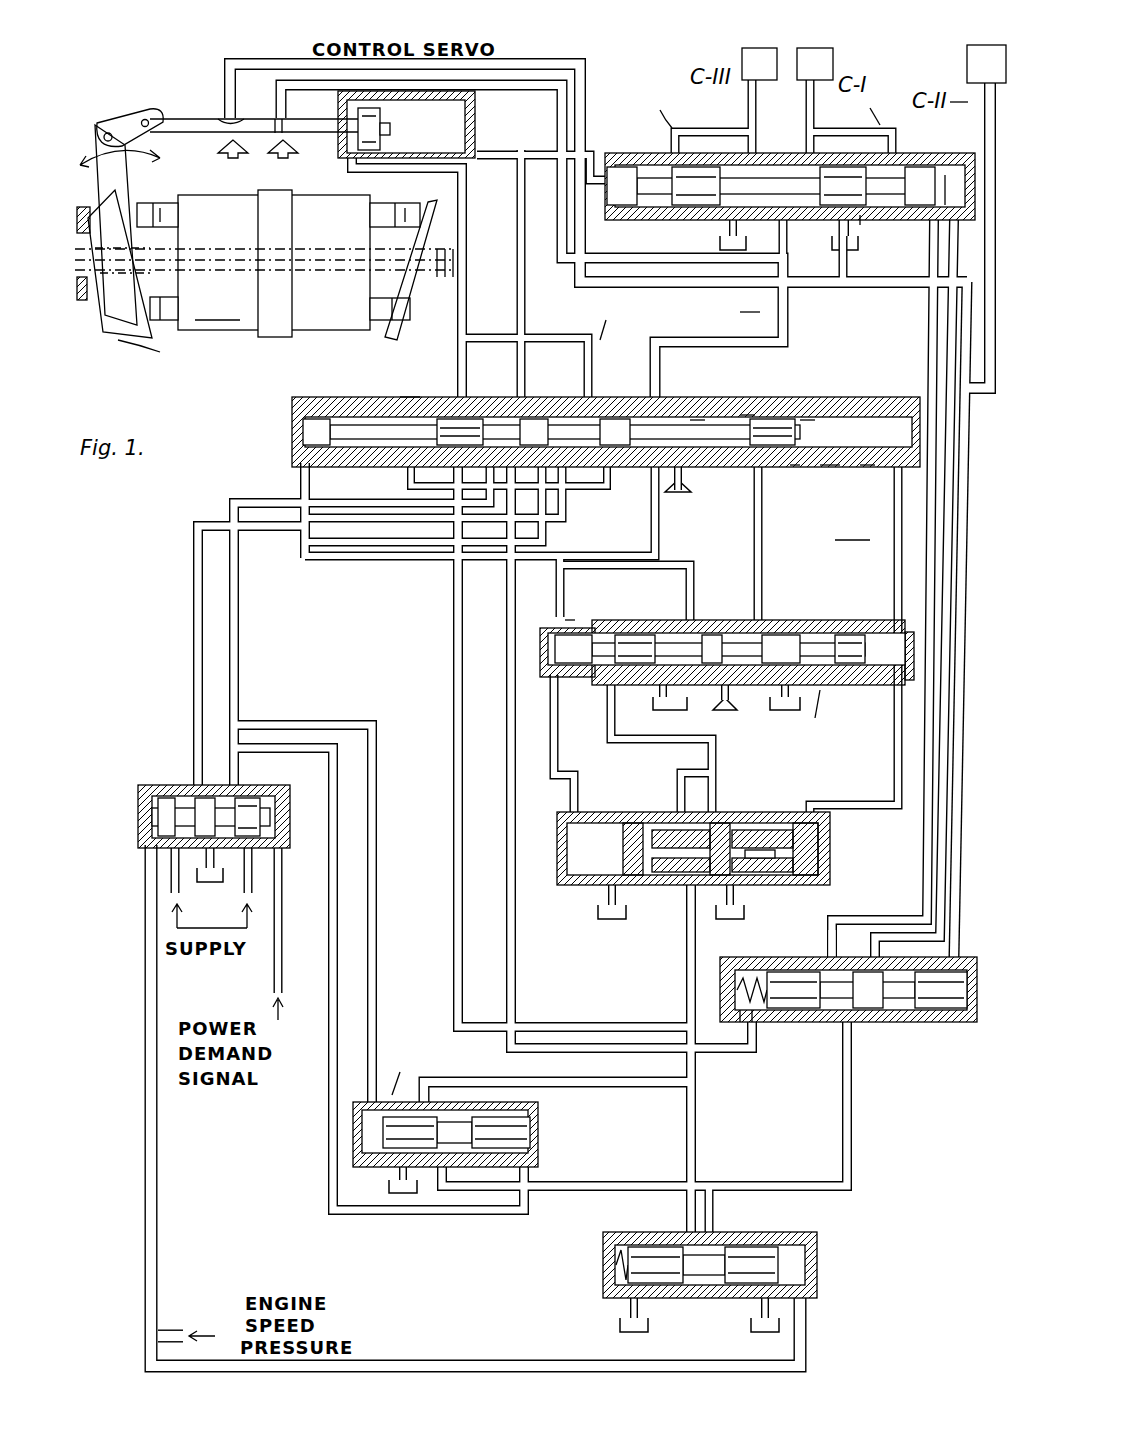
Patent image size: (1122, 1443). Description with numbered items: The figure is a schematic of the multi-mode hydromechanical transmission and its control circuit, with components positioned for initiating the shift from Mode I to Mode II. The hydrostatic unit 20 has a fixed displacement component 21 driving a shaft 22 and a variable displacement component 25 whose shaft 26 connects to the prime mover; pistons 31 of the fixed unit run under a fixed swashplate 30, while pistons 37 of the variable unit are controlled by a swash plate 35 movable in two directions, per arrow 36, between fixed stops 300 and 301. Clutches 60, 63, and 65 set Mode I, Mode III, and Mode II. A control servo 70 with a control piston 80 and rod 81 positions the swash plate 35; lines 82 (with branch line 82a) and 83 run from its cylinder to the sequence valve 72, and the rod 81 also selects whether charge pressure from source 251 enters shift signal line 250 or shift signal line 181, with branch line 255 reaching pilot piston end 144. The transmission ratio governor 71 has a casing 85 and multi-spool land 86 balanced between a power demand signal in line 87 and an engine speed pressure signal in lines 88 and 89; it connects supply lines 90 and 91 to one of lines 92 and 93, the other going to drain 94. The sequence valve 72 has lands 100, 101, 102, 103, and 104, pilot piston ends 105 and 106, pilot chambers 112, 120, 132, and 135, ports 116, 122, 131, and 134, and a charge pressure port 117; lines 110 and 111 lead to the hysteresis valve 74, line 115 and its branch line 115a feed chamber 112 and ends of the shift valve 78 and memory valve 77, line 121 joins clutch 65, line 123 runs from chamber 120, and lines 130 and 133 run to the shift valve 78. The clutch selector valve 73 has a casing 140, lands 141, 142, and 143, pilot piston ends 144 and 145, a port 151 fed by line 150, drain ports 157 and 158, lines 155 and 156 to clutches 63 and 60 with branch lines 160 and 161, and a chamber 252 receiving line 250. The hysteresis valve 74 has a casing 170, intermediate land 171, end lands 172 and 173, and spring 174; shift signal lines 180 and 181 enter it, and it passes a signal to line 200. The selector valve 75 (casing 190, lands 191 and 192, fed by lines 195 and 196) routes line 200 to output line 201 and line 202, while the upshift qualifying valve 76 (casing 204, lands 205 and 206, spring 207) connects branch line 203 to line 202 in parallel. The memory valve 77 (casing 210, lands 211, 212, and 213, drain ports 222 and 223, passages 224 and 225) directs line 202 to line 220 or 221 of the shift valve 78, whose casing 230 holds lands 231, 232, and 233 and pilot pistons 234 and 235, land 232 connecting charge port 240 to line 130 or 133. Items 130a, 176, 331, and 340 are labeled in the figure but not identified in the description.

The hydrostatic unit 20 is at (230, 345).
The fixed displacement component 21 is at (350, 320).
The shaft 22 is at (440, 262).
The variable displacement component 25 is at (217, 306).
The shaft 26 is at (140, 300).
The fixed swashplate 30 is at (420, 302).
The pistons 31 is at (377, 205).
The swash plate 35 is at (141, 362).
The arrow 36 is at (158, 158).
The pistons 37 is at (165, 204).
The clutch 60 is at (825, 70).
The clutch 63 is at (742, 60).
The clutch 65 is at (967, 72).
The control servo 70 is at (478, 103).
The transmission ratio governor 71 is at (254, 766).
The sequence valve 72 is at (576, 448).
The clutch selector valve 73 is at (782, 196).
The hysteresis valve 74 is at (849, 1021).
The selector valve 75 is at (465, 1109).
The upshift qualifying valve 76 is at (721, 1246).
The memory valve 77 is at (722, 852).
The shift valve 78 is at (727, 662).
The control piston 80 is at (392, 131).
The rod 81 is at (306, 160).
The line 82 is at (468, 212).
The branch line 82a is at (610, 319).
The line 83 is at (523, 290).
The casing 85 is at (140, 838).
The multi-spool valve land 86 is at (250, 800).
The line 87 is at (273, 958).
The line 88 is at (170, 1328).
The line 89 is at (143, 1137).
The line 90 is at (170, 882).
The line 91 is at (255, 876).
The line 92 is at (193, 608).
The line 93 is at (240, 605).
The drain 94 is at (205, 882).
The land 100 is at (475, 412).
The land 101 is at (536, 412).
The land 102 is at (625, 412).
The land 103 is at (700, 412).
The land 104 is at (812, 412).
The pilot piston end 105 is at (348, 466).
The pilot piston end 106 is at (808, 470).
The line 110 is at (450, 790).
The line 111 is at (505, 812).
The pilot chamber 112 is at (300, 438).
The line 115 is at (620, 570).
The branch line 115a is at (560, 607).
The port 116 is at (450, 507).
The charge pressure port 117 is at (672, 480).
The pilot chamber 120 is at (870, 470).
The line 121 is at (925, 385).
The port 122 is at (760, 395).
The line 123 is at (893, 555).
The line 130 is at (712, 560).
The passage branch 130a is at (430, 548).
The port 131 is at (606, 490).
The pilot chamber 132 is at (440, 395).
The second line 133 is at (825, 552).
The port 134 is at (774, 433).
The pilot chamber 135 is at (800, 470).
The valve casing 140 is at (878, 275).
The land 141 is at (696, 186).
The land 142 is at (744, 237).
The land 143 is at (843, 186).
The pilot piston end 144 is at (620, 165).
The pilot piston end 145 is at (935, 165).
The line 150 is at (748, 315).
The port 151 is at (829, 237).
The line 155 is at (748, 106).
The line 156 is at (820, 122).
The drain port 157 is at (760, 245).
The drain port 158 is at (841, 250).
The branch line 160 is at (651, 103).
The branch line 161 is at (890, 103).
The casing 170 is at (760, 1045).
The intermediate land 171 is at (838, 965).
The end land 172 is at (760, 1034).
The end land 173 is at (868, 1012).
The spring 174 is at (742, 1030).
The hysteresis valve land 176 is at (932, 1012).
The shift signal line 180 is at (937, 740).
The shift signal line 181 is at (252, 56).
The casing 190 is at (400, 1069).
The land 191 is at (395, 1128).
The land 192 is at (500, 1128).
The interconnecting line 195 is at (378, 960).
The interconnecting line 196 is at (395, 1218).
The line 200 is at (855, 1156).
The output line 201 is at (510, 1075).
The line 202 is at (686, 996).
The branch line 203 is at (716, 1216).
The casing 204 is at (800, 1235).
The land 205 is at (653, 1250).
The land 206 is at (735, 1300).
The spring 207 is at (600, 1252).
The casing 210 is at (595, 743).
The valve land 211 is at (620, 845).
The central valve land 212 is at (748, 882).
The valve land 213 is at (818, 880).
The line 220 is at (798, 755).
The line 221 is at (646, 750).
The drain port 222 is at (633, 908).
The drain port 223 is at (712, 910).
The longitudinal passage 224 is at (700, 830).
The longitudinal passage 225 is at (770, 830).
The valve casing 230 is at (655, 615).
The valve land 231 is at (637, 685).
The valve land 232 is at (727, 632).
The valve land 233 is at (762, 698).
The pilot piston 234 is at (582, 680).
The pilot piston 235 is at (796, 713).
The charge port 240 is at (720, 690).
The shift signal line 250 is at (532, 241).
The source of charge pressure 251 is at (244, 160).
The chamber 252 is at (940, 210).
The branch line 255 is at (560, 147).
The fixed stop 300 is at (120, 264).
The fixed stop 301 is at (128, 335).
The rod seal 331 is at (270, 116).
The servo rod 340 is at (216, 116).